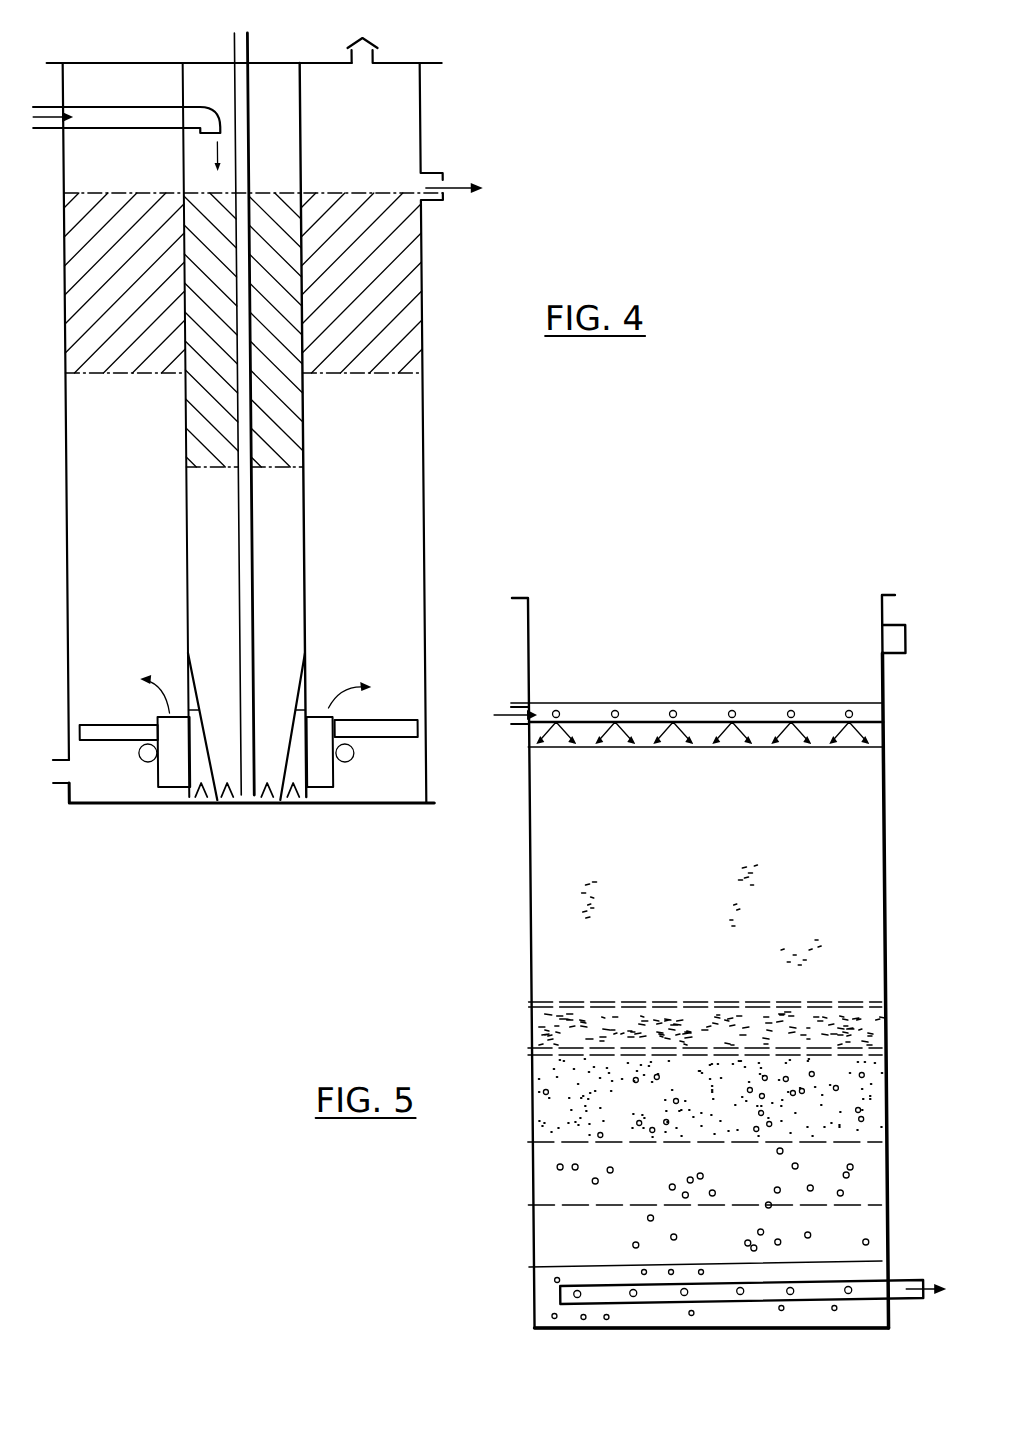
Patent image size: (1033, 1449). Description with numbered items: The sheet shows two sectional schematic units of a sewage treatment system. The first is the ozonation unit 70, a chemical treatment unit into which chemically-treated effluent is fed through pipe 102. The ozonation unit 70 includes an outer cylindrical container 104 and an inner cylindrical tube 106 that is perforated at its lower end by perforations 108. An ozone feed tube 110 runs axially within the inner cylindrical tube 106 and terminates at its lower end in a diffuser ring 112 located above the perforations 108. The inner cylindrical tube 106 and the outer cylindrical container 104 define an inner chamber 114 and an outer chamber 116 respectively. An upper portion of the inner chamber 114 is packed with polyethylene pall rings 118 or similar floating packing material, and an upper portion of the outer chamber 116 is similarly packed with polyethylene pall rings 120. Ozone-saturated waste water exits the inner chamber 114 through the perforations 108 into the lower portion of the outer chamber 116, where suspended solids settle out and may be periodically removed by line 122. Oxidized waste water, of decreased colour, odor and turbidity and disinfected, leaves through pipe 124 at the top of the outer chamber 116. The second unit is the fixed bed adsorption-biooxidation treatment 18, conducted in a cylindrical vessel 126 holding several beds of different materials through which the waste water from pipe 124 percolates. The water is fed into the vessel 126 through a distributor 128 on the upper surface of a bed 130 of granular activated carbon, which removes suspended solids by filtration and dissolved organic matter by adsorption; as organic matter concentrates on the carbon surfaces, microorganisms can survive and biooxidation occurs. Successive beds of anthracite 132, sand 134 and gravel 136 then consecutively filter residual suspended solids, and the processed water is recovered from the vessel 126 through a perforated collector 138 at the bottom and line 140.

In FIG. 4, the ozonation unit 70 is at (521, 85).
In FIG. 4, the pipe 102 is at (114, 131).
In FIG. 4, the outer cylindrical container 104 is at (423, 403).
In FIG. 4, the inner cylindrical tube 106 is at (301, 418).
In FIG. 4, the perforations 108 is at (286, 800).
In FIG. 4, the ozone feed tube 110 is at (250, 42).
In FIG. 4, the diffuser ring 112 is at (226, 803).
In FIG. 4, the inner chamber 114 is at (283, 523).
In FIG. 4, the outer chamber 116 is at (398, 541).
In FIG. 4, the polyethylene pall rings 118 is at (268, 205).
In FIG. 4, the polyethylene pall rings 120 is at (395, 285).
In FIG. 4, the line 122 is at (46, 787).
In FIG. 4, the pipe 124 is at (443, 183).
In FIG. 5, the pipe 124 is at (512, 706).
In FIG. 5, the fixed bed adsorption-biooxidation treatment 18 is at (725, 562).
In FIG. 5, the cylindrical vessel 126 is at (526, 922).
In FIG. 5, the distributor 128 is at (643, 704).
In FIG. 5, the bed of granular activated carbon 130 is at (556, 843).
In FIG. 5, the bed of anthracite 132 is at (552, 1029).
In FIG. 5, the bed of sand 134 is at (555, 1101).
In FIG. 5, the bed of gravel 136 is at (540, 1279).
In FIG. 5, the perforated drain pipe 138 is at (654, 1299).
In FIG. 5, the line 140 is at (900, 1280).